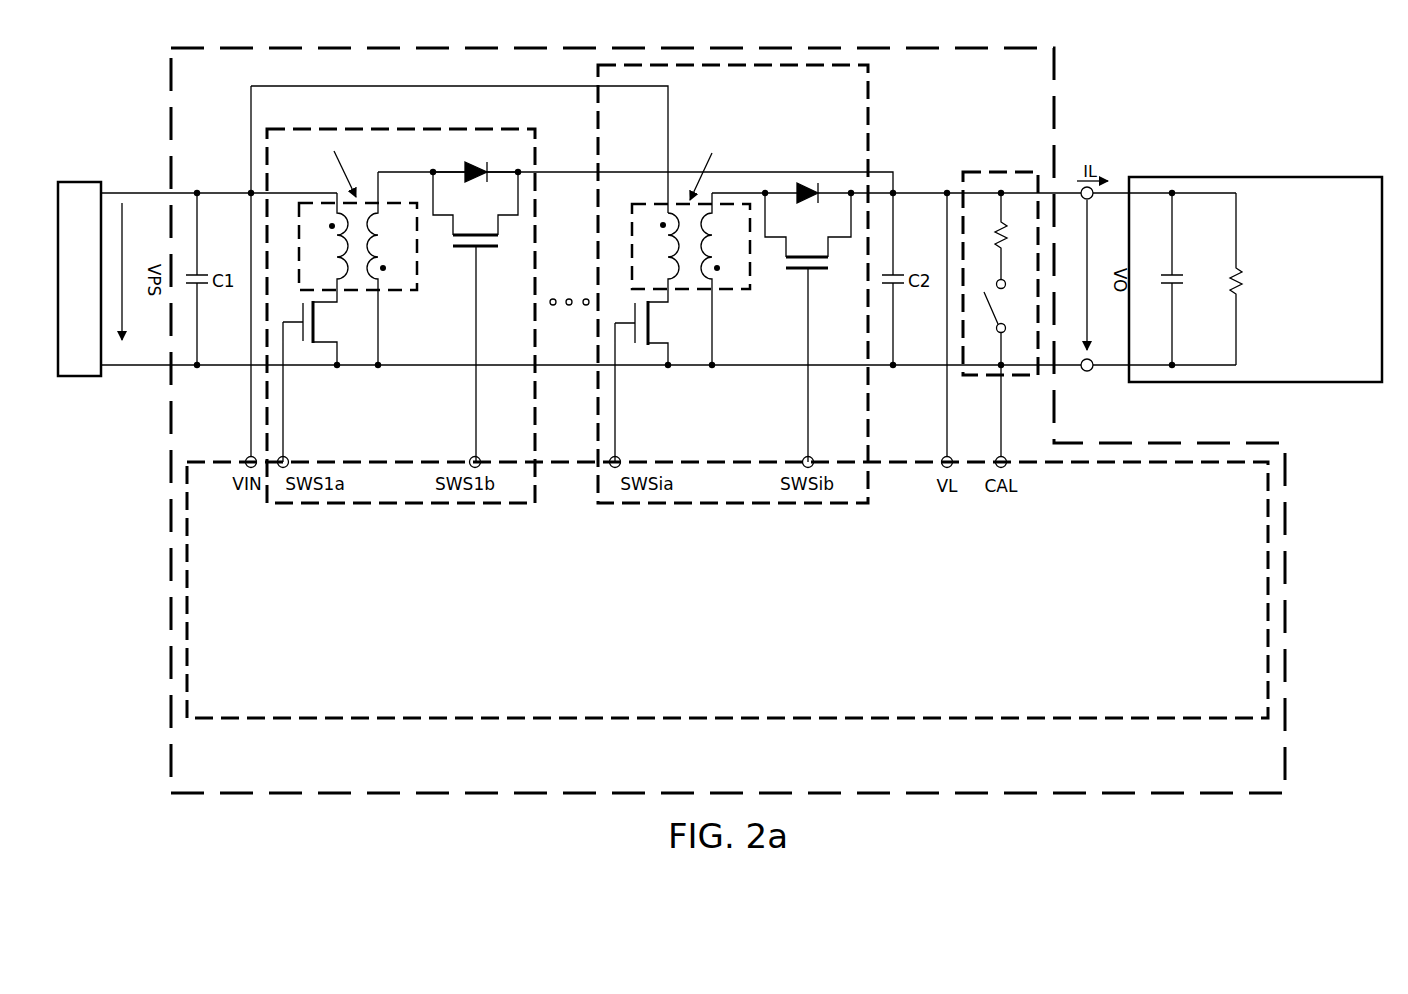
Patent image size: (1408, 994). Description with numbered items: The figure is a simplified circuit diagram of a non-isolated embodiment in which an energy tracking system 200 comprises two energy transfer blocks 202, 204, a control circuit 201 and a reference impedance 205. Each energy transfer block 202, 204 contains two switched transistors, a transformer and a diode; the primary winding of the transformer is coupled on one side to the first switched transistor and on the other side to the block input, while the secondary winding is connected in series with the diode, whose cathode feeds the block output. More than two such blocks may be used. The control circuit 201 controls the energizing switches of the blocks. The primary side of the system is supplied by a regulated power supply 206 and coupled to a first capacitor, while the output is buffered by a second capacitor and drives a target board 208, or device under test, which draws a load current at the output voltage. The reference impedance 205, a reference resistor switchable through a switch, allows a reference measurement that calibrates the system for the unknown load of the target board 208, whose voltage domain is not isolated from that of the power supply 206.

The energy tracking system 200 is at (1064, 115).
The control circuit 201 is at (366, 722).
The energy transfer block 202 is at (321, 508).
The energy transfer block 204 is at (651, 508).
The reference impedance 205 is at (974, 170).
The power supply 206 is at (80, 182).
The target board 208 is at (1358, 174).